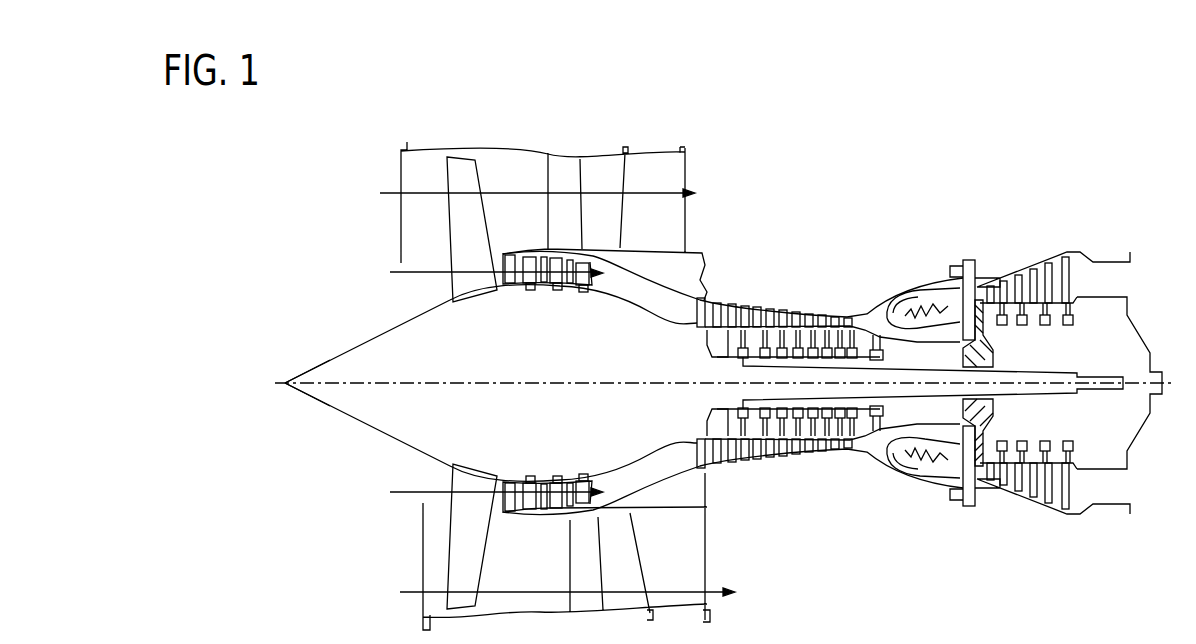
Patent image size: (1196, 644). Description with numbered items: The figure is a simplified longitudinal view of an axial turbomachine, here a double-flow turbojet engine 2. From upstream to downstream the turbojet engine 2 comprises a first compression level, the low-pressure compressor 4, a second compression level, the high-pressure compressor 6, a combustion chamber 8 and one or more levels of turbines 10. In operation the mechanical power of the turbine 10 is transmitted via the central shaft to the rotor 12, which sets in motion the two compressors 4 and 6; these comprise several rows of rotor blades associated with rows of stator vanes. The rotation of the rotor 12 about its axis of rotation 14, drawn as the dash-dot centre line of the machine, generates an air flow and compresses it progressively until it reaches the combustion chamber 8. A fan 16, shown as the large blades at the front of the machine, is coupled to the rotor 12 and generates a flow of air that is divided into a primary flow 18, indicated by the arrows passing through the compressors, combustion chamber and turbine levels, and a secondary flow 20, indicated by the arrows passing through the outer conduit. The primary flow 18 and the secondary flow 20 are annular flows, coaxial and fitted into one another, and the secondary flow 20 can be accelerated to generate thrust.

The turbojet engine 2 is at (913, 169).
The low-pressure compressor 4 is at (523, 290).
The high-pressure compressor 6 is at (757, 313).
The combustion chamber 8 is at (900, 313).
The turbine 10 is at (1053, 263).
The rotor 12 is at (372, 418).
The axis of rotation 14 is at (560, 388).
The fan 16 is at (467, 222).
The primary flow 18 is at (485, 383).
The secondary flow 20 is at (545, 392).